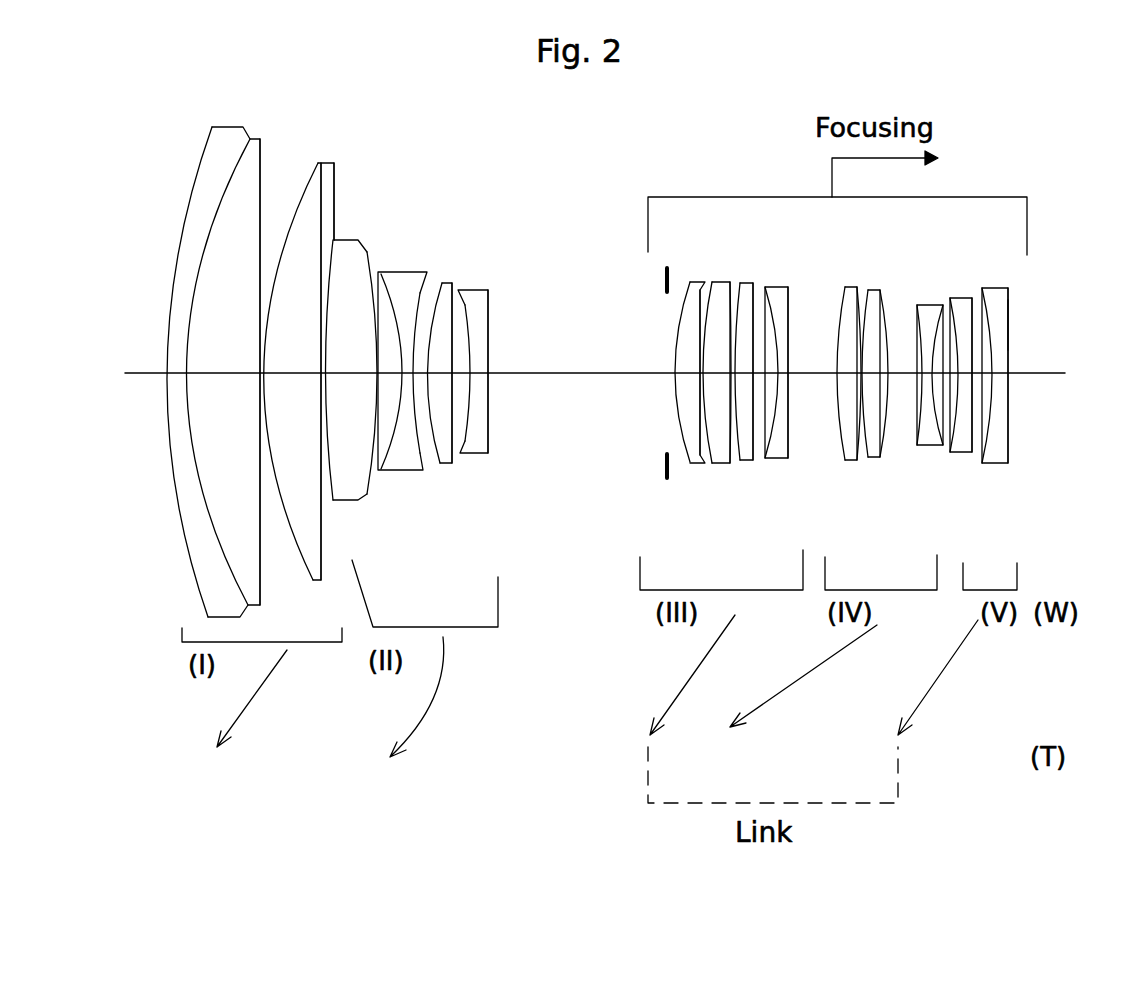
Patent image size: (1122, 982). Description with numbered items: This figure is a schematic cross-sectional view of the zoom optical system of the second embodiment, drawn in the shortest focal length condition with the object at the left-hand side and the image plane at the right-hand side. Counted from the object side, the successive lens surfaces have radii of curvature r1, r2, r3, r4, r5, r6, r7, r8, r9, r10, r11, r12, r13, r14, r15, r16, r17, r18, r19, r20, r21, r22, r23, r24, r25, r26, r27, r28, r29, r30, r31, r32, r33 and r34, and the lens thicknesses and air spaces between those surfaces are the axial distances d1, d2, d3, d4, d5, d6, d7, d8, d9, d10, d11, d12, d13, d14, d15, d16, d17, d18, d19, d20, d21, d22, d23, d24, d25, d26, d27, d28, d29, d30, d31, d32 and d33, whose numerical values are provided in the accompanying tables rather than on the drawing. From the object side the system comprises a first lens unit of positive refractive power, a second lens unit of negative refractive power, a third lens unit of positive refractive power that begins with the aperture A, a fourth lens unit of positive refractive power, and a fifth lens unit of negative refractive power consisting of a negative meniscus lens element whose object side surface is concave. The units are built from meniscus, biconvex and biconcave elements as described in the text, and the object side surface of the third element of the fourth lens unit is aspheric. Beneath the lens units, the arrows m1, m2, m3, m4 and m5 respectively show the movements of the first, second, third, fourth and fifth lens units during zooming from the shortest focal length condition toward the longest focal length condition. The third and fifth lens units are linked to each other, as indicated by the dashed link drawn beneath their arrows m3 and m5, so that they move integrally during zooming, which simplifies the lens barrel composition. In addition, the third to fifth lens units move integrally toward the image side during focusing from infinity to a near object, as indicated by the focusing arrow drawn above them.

The radius of curvature of the first lens surface r1 is at (205, 152).
The radius of curvature of the second lens surface r2 is at (237, 165).
The radius of curvature of the third lens surface r3 is at (264, 172).
The radius of curvature of the fourth lens surface r4 is at (303, 182).
The radius of curvature of the fifth lens surface r5 is at (333, 190).
The radius of curvature of the sixth lens surface r6 is at (352, 245).
The radius of curvature of the seventh lens surface r7 is at (365, 247).
The radius of curvature of the eighth lens surface r8 is at (390, 262).
The radius of curvature of the ninth lens surface r9 is at (380, 272).
The radius of curvature of the tenth lens surface r10 is at (422, 283).
The radius of curvature of the eleventh lens surface r11 is at (442, 282).
The radius of curvature of the twelfth lens surface r12 is at (452, 283).
The radius of curvature of the thirteenth lens surface r13 is at (468, 302).
The radius of curvature of the fourteenth lens surface r14 is at (490, 290).
The radius of curvature of the fifteenth lens surface r15 is at (662, 280).
The radius of curvature of the sixteenth lens surface r16 is at (678, 285).
The radius of curvature of the seventeenth lens surface r17 is at (700, 285).
The radius of curvature of the eighteenth lens surface r18 is at (711, 285).
The radius of curvature of the nineteenth lens surface r19 is at (731, 285).
The radius of curvature of the twentieth lens surface r20 is at (742, 285).
The radius of curvature of the twenty-first lens surface r21 is at (754, 285).
The radius of curvature of the twenty-second lens surface r22 is at (767, 287).
The radius of curvature of the twenty-third lens surface r23 is at (788, 287).
The radius of curvature of the twenty-fourth lens surface r24 is at (844, 287).
The radius of curvature of the twenty-fifth lens surface r25 is at (858, 287).
The radius of curvature of the twenty-sixth lens surface r26 is at (870, 290).
The radius of curvature of the twenty-seventh lens surface r27 is at (882, 290).
The radius of curvature of the twenty-eighth lens surface r28 is at (918, 305).
The radius of curvature of the twenty-ninth lens surface r29 is at (941, 305).
The radius of curvature of the thirtieth lens surface r30 is at (952, 298).
The radius of curvature of the thirty-first lens surface r31 is at (972, 298).
The radius of curvature of the thirty-second lens surface r32 is at (985, 288).
The radius of curvature of the thirty-third lens surface r33 is at (1006, 312).
The radius of curvature of the thirty-fourth lens surface r34 is at (1010, 340).
The axial distance of the first lens surface d1 is at (180, 369).
The axial distance of the second lens surface d2 is at (221, 357).
The axial distance of the third lens surface d3 is at (268, 492).
The axial distance of the fourth lens surface d4 is at (286, 357).
The axial distance of the fifth lens surface d5 is at (327, 500).
The axial distance of the sixth lens surface d6 is at (346, 478).
The axial distance of the seventh lens surface d7 is at (351, 357).
The axial distance of the eighth lens surface d8 is at (388, 385).
The axial distance of the ninth lens surface d9 is at (405, 388).
The axial distance of the tenth lens surface d10 is at (420, 388).
The axial distance of the eleventh lens surface d11 is at (438, 385).
The axial distance of the twelfth lens surface d12 is at (463, 385).
The axial distance of the thirteenth lens surface d13 is at (472, 385).
The axial distance of the fourteenth lens surface d14 is at (554, 357).
The axial distance of the fifteenth lens surface d15 is at (649, 357).
The axial distance of the sixteenth lens surface d16 is at (688, 380).
The axial distance of the seventeenth lens surface d17 is at (702, 388).
The axial distance of the eighteenth lens surface d18 is at (715, 388).
The axial distance of the nineteenth lens surface d19 is at (733, 388).
The axial distance of the twentieth lens surface d20 is at (745, 388).
The axial distance of the twenty-first lens surface d21 is at (766, 388).
The axial distance of the twenty-second lens surface d22 is at (783, 388).
The axial distance of the twenty-third lens surface d23 is at (814, 357).
The axial distance of the twenty-fourth lens surface d24 is at (848, 380).
The axial distance of the twenty-fifth lens surface d25 is at (861, 388).
The axial distance of the twenty-sixth lens surface d26 is at (875, 388).
The axial distance of the twenty-seventh lens surface d27 is at (902, 385).
The axial distance of the twenty-eighth lens surface d28 is at (926, 388).
The axial distance of the twenty-ninth lens surface d29 is at (945, 388).
The axial distance of the thirtieth lens surface d30 is at (965, 385).
The axial distance of the thirty-first lens surface d31 is at (982, 388).
The axial distance of the thirty-second lens surface d32 is at (1000, 388).
The axial distance of the thirty-third lens surface d33 is at (1012, 386).
The aperture A is at (662, 462).
The movement of the first lens unit m1 is at (248, 703).
The movement of the second lens unit m2 is at (430, 703).
The movement of the third lens unit m3 is at (697, 668).
The movement of the fourth lens unit m4 is at (827, 662).
The movement of the fifth lens unit m5 is at (937, 677).